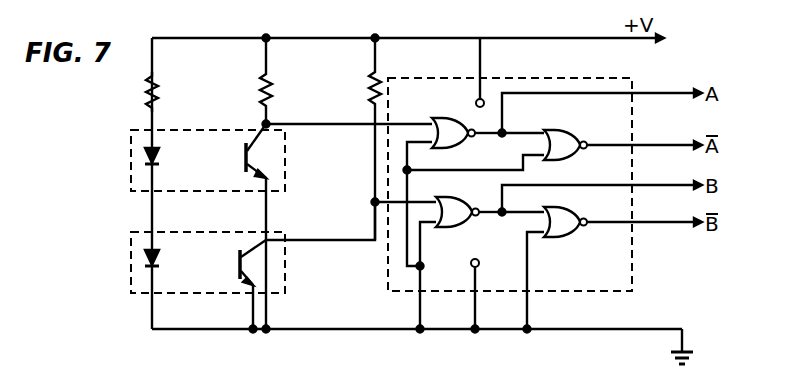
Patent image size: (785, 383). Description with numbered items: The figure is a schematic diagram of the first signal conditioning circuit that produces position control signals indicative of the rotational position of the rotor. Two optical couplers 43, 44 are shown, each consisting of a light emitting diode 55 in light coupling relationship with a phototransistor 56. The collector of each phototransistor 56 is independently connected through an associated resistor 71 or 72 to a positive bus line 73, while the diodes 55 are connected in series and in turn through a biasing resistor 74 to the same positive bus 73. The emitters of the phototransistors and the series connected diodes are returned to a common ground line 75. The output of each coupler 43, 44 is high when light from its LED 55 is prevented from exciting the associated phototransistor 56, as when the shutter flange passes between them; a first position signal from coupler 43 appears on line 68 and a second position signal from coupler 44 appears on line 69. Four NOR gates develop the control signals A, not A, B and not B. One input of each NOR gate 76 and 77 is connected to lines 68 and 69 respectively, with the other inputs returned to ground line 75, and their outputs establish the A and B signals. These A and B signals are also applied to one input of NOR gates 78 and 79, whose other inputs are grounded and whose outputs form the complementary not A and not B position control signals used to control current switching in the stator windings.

The positive bus line 73 is at (236, 37).
The biasing resistor 74 is at (158, 86).
The resistor 71 is at (272, 86).
The resistor 72 is at (381, 90).
The light emitting diode 55 is at (160, 156).
The phototransistor 56 is at (246, 155).
The optical coupler 43 is at (223, 157).
The optical coupler 44 is at (223, 280).
The line 68 is at (347, 124).
The line 69 is at (352, 240).
The common ground line 75 is at (357, 328).
The NOR gate 76 is at (444, 119).
The NOR gate 77 is at (462, 225).
The NOR gate 78 is at (558, 134).
The NOR gate 79 is at (574, 210).